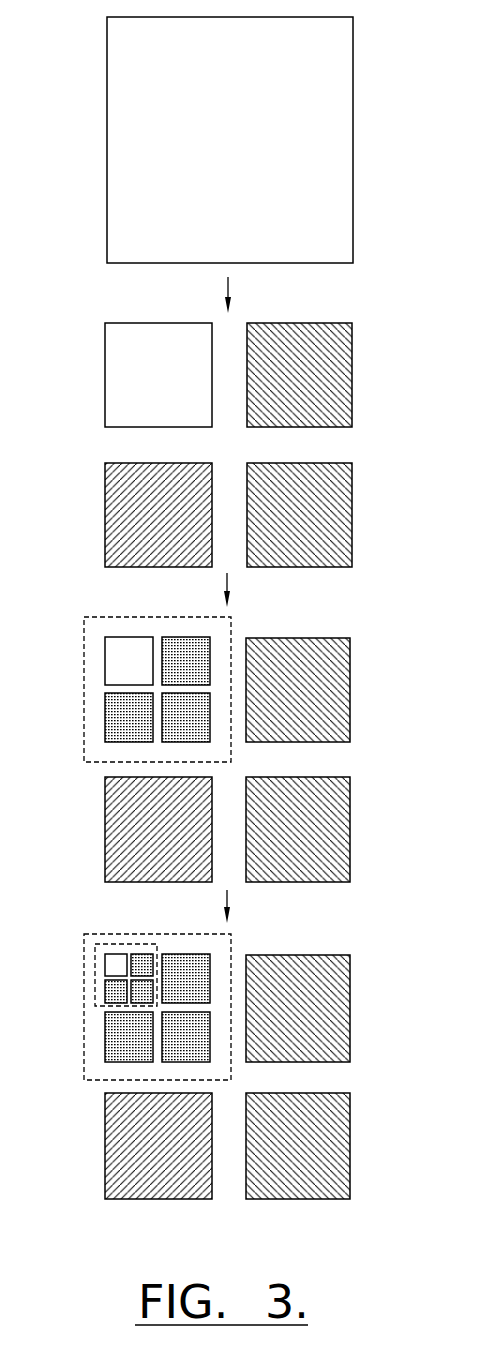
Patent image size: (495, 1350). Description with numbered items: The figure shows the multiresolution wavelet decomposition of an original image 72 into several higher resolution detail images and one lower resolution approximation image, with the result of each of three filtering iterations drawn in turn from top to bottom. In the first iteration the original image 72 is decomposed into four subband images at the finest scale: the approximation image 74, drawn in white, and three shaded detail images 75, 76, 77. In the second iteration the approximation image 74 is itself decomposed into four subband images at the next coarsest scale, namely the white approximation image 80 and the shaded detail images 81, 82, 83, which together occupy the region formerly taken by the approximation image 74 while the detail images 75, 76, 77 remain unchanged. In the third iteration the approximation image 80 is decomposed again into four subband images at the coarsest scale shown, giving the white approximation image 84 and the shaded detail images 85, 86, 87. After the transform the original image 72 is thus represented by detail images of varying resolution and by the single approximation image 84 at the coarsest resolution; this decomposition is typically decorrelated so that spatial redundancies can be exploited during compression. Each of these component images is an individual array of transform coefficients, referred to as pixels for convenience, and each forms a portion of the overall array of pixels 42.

The original image 72 is at (340, 85).
The approximation image 74 is at (115, 361).
The detail image 75 is at (336, 375).
The detail image 76 is at (336, 520).
The detail image 77 is at (113, 513).
The approximation image 80 is at (111, 645).
The detail image 81 is at (181, 645).
The detail image 82 is at (176, 717).
The detail image 83 is at (120, 717).
The approximation image 84 is at (120, 953).
The detail image 85 is at (143, 960).
The detail image 86 is at (143, 990).
The detail image 87 is at (113, 993).
The overall array of pixels 42 is at (338, 1078).